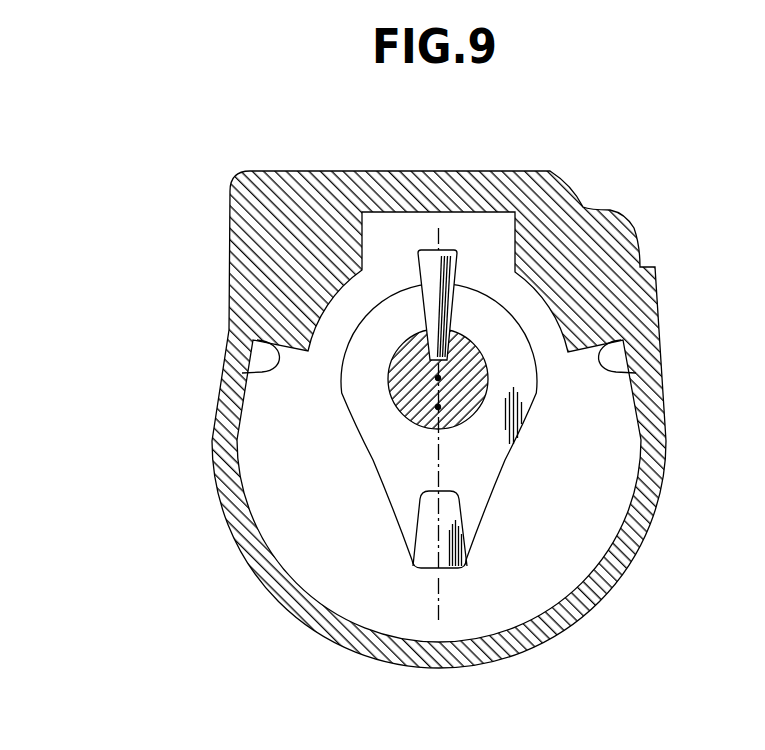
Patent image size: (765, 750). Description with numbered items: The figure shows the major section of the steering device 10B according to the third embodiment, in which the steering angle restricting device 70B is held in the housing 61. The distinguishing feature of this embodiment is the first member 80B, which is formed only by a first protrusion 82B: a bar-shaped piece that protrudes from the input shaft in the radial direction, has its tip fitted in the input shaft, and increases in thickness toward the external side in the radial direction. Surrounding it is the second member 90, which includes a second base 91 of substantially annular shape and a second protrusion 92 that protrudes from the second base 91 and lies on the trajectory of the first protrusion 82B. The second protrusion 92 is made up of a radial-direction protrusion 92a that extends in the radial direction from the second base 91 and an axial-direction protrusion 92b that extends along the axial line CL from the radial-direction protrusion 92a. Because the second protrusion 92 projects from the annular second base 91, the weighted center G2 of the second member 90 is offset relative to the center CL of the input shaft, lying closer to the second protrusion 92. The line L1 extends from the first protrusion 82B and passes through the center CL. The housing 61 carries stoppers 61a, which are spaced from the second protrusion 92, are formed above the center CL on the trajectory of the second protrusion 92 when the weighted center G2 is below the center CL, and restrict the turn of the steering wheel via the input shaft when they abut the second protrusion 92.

The steering angle restricting device 70B is at (384, 381).
The steering device 10B is at (145, 143).
The housing 61 is at (307, 170).
The stopper 61a is at (242, 373).
The first protrusion 82B is at (495, 239).
The first member 80B is at (458, 265).
The second member 90 is at (394, 501).
The second base 91 is at (530, 423).
The second protrusion 92 is at (558, 498).
The radial-direction protrusion 92a is at (468, 483).
The axial-direction protrusion 92b is at (447, 518).
The center of the input shaft CL is at (438, 378).
The weighted center of the second member G2 is at (438, 407).
The line L1 is at (436, 607).